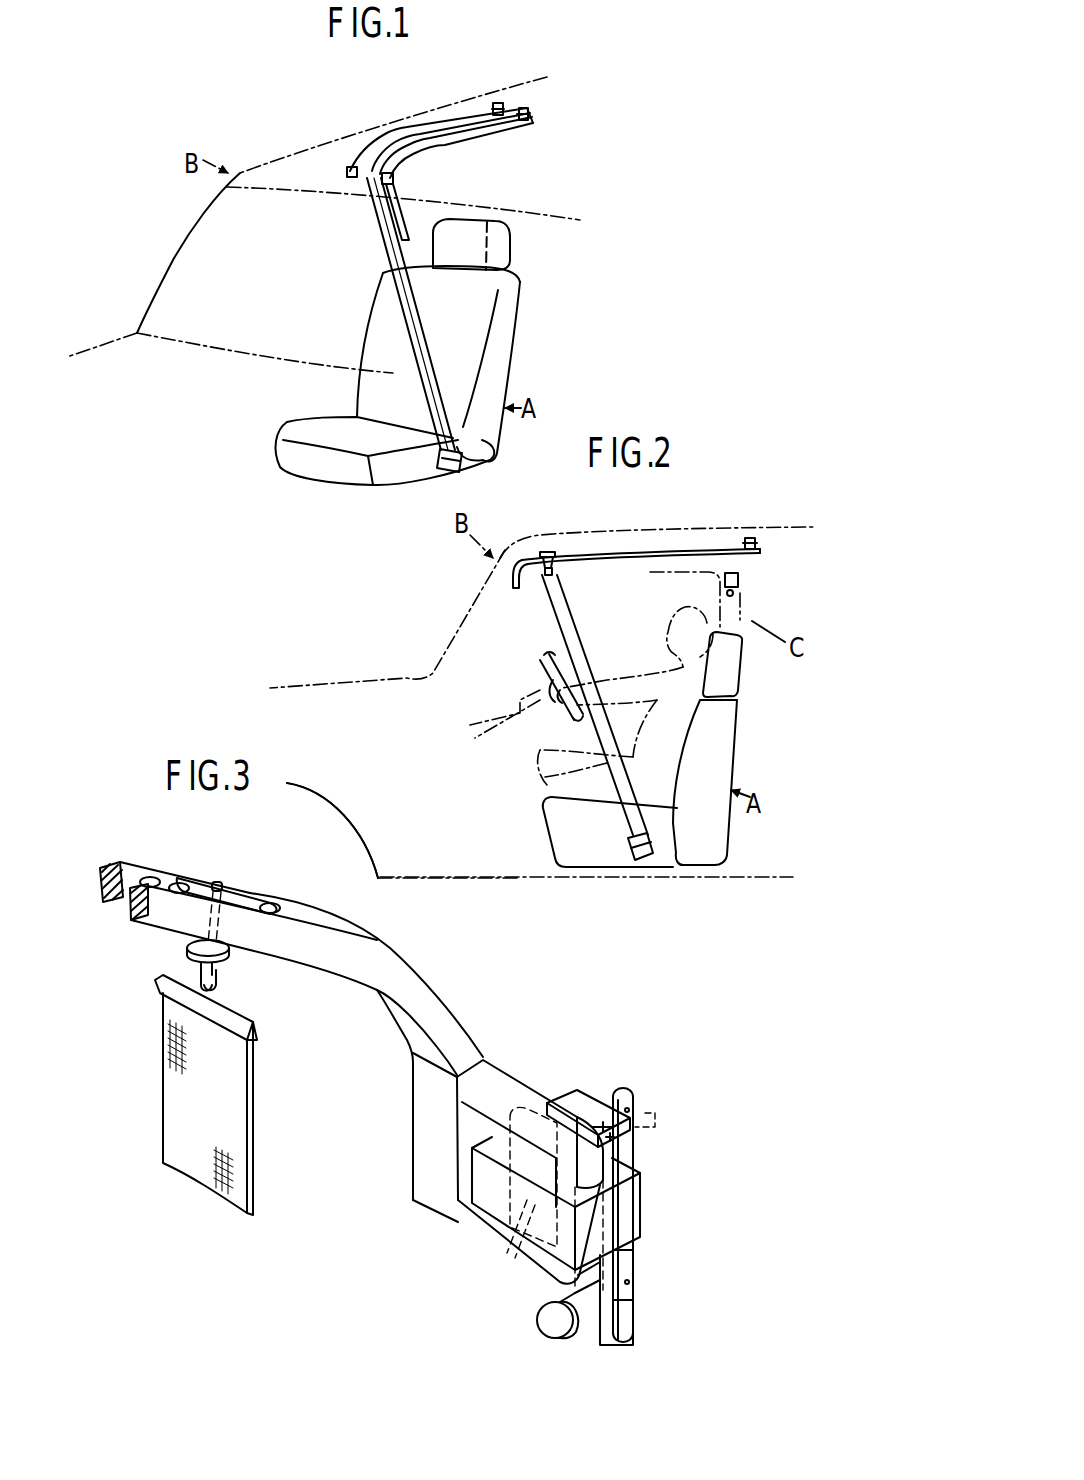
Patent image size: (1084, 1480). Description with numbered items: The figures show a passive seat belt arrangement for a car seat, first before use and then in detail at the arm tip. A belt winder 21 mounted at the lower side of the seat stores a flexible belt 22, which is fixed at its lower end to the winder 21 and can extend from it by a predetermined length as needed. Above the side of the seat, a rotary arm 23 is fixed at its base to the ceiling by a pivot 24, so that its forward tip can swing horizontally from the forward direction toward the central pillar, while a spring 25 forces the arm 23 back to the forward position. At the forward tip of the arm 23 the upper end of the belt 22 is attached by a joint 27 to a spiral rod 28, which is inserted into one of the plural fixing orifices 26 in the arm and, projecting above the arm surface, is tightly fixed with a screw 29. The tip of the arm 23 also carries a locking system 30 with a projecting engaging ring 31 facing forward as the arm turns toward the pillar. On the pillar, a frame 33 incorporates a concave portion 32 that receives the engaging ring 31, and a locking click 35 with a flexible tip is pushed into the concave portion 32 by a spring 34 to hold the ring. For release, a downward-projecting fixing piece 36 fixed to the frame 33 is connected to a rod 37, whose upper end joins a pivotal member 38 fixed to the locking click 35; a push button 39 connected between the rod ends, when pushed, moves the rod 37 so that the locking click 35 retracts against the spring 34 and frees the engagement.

In FIG. 1, the belt winder 21 is at (458, 467).
In FIG. 2, the belt winder 21 is at (647, 857).
In FIG. 1, the flexible belt 22 is at (407, 235).
In FIG. 2, the flexible belt 22 is at (562, 607).
In FIG. 3, the flexible belt 22 is at (177, 1115).
In FIG. 1, the rotary arm 23 is at (423, 150).
In FIG. 2, the rotary arm 23 is at (648, 550).
In FIG. 3, the rotary arm 23 is at (302, 913).
In FIG. 1, the pivot 24 is at (523, 108).
In FIG. 2, the pivot 24 is at (749, 537).
In FIG. 1, the spring 25 is at (493, 108).
In FIG. 2, the spring 25 is at (757, 548).
In FIG. 3, the fixing orifice 26 is at (170, 882).
In FIG. 3, the joint 27 is at (185, 950).
In FIG. 3, the spiral rod 28 is at (217, 881).
In FIG. 3, the screw 29 is at (233, 897).
In FIG. 3, the locking system 30 is at (640, 1165).
In FIG. 1, the engaging ring 31 is at (349, 166).
In FIG. 3, the engaging ring 31 is at (515, 1093).
In FIG. 3, the concave portion 32 is at (613, 1192).
In FIG. 2, the frame 33 is at (740, 580).
In FIG. 3, the frame 33 is at (633, 1215).
In FIG. 3, the spring 34 is at (602, 1127).
In FIG. 3, the locking click 35 is at (508, 1250).
In FIG. 3, the fixing piece 36 is at (610, 1343).
In FIG. 3, the rod 37 is at (628, 1256).
In FIG. 3, the pivotal member 38 is at (636, 1130).
In FIG. 2, the push button 39 is at (734, 594).
In FIG. 3, the push button 39 is at (550, 1322).